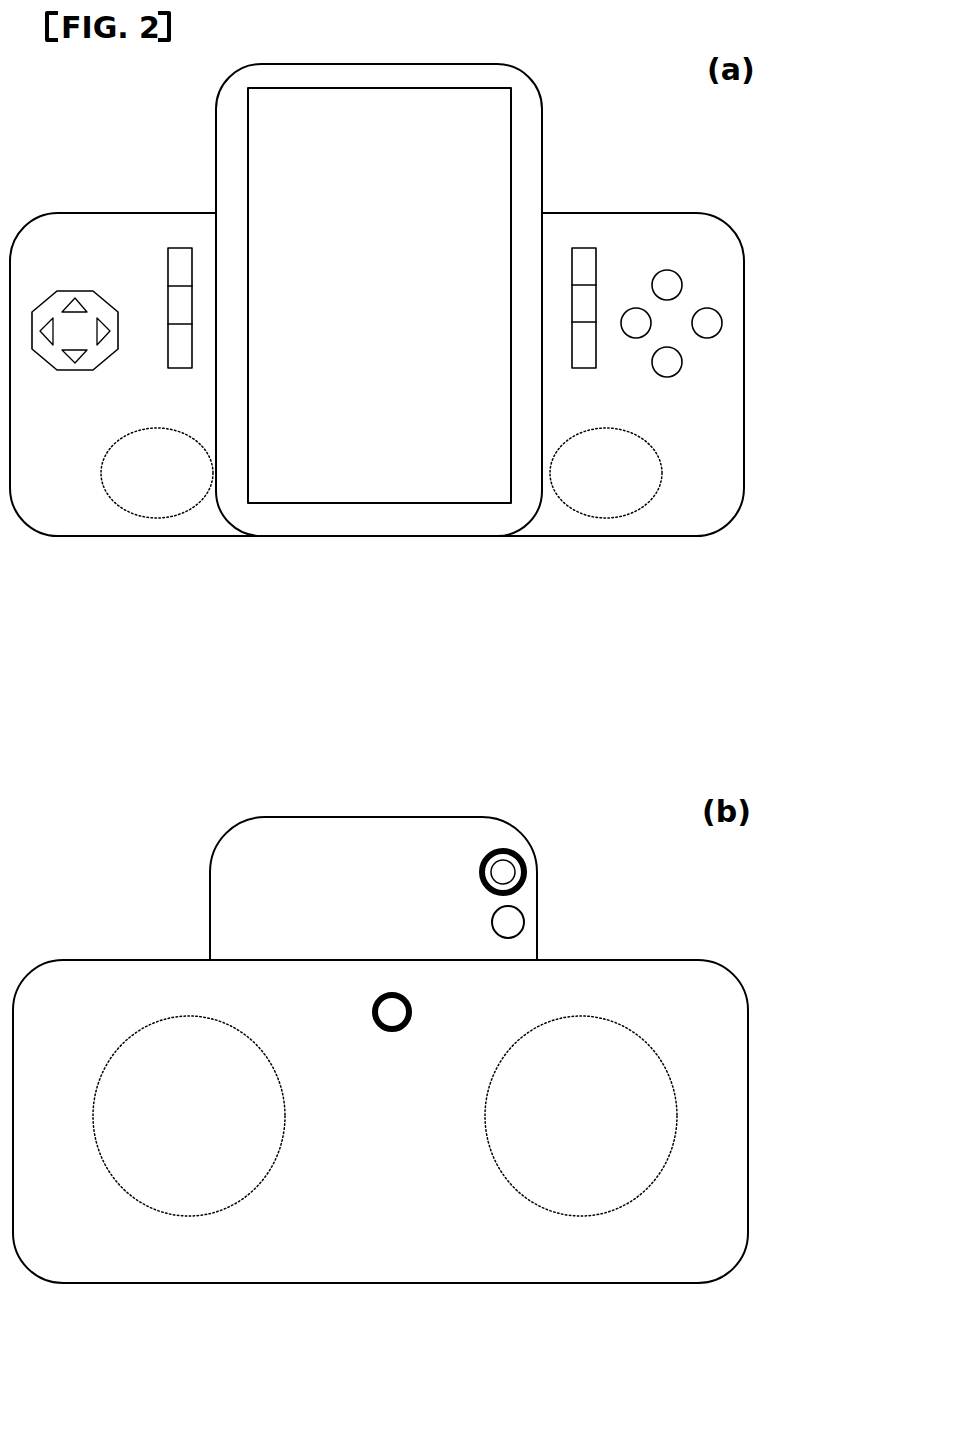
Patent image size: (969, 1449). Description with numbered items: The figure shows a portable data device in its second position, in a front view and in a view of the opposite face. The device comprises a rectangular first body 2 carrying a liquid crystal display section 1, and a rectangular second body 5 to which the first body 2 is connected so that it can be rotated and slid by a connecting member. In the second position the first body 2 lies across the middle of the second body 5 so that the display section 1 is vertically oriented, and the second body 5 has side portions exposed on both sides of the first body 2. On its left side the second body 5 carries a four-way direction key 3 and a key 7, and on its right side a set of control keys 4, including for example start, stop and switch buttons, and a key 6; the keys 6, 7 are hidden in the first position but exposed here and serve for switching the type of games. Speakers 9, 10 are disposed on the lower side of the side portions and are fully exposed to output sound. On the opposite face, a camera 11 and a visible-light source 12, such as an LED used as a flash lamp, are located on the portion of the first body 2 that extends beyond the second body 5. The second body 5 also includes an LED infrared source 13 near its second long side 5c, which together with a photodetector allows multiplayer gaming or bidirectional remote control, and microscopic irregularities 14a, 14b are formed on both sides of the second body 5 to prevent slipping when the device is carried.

The liquid crystal display section 1 is at (478, 112).
The first body 2 is at (273, 71).
The direction key 3 is at (72, 317).
The set of control keys 4 is at (665, 318).
The second body 5 is at (713, 412).
The second long side 5c is at (118, 213).
The key 6 is at (584, 270).
The key 7 is at (181, 272).
The speaker 9 is at (595, 495).
The speaker 10 is at (147, 483).
The camera 11 is at (522, 855).
The visible-light source 12 is at (513, 930).
The LED infrared source 13 is at (385, 1010).
The microscopic irregularities 14a is at (195, 1177).
The microscopic irregularities 14b is at (563, 1165).